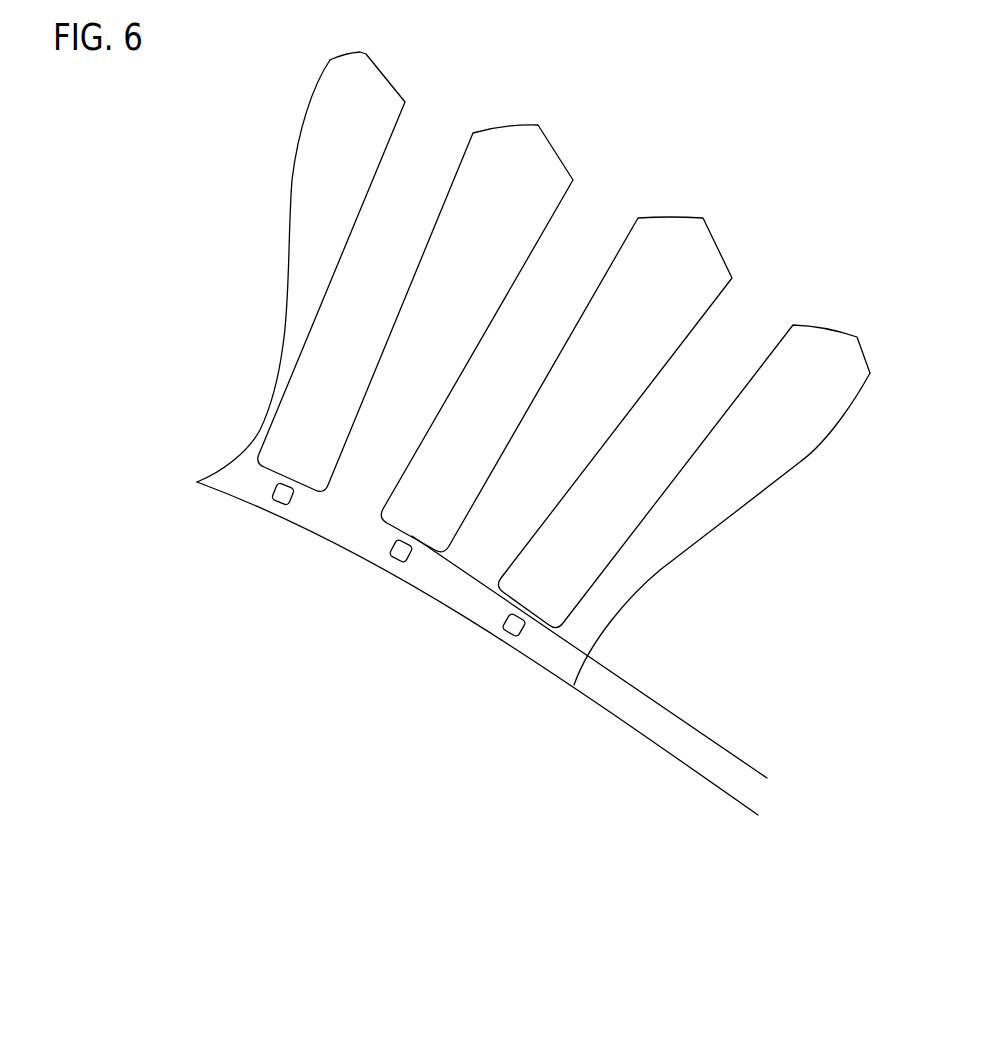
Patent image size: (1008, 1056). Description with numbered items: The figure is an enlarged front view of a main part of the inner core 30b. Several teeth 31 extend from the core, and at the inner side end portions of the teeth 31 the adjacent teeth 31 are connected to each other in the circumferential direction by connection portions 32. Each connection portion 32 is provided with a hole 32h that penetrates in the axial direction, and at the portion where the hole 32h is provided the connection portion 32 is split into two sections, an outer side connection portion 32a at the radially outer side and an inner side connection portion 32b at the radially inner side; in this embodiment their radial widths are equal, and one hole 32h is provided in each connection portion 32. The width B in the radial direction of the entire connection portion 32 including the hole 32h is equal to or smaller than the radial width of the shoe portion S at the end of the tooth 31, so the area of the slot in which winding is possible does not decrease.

The inner core 30b is at (510, 372).
The tooth 31 is at (657, 252).
The connection portion 32 is at (424, 648).
The outer side connection portion 32a is at (412, 536).
The inner side connection portion 32b is at (390, 567).
The hole 32h is at (518, 634).
The shoe portion S is at (537, 638).
The width in the radial direction of the entire connection portion B is at (678, 888).